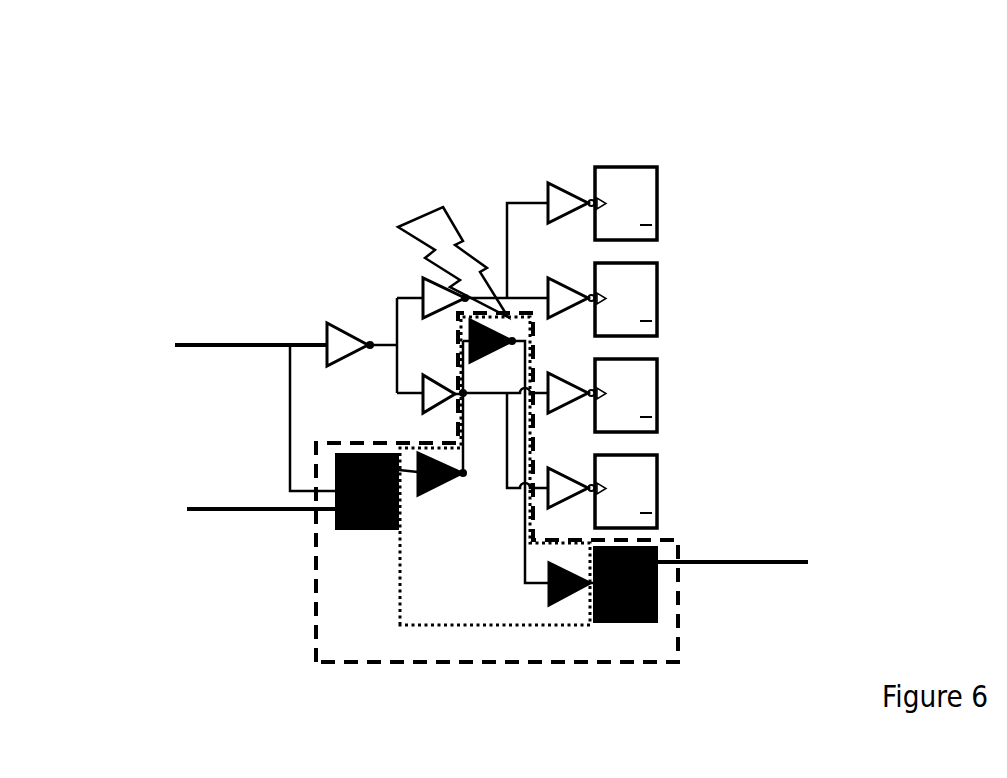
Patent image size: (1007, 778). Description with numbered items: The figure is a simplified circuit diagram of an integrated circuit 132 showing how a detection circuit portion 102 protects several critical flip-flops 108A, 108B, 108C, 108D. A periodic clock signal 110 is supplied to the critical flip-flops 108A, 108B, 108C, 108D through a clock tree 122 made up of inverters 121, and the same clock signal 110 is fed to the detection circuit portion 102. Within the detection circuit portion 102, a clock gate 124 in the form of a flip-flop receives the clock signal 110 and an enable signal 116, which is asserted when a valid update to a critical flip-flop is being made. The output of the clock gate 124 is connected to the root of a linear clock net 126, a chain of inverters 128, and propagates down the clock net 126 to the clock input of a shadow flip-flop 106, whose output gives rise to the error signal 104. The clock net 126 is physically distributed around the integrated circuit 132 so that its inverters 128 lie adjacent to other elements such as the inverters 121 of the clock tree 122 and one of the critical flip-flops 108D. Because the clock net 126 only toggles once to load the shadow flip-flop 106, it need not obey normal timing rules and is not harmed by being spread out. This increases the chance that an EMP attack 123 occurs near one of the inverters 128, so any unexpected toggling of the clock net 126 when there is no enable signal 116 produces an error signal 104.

The integrated circuit 132 is at (283, 150).
The periodic clock signal 110 is at (270, 394).
The enable signal 116 is at (232, 515).
The clock tree 122 is at (391, 299).
The EMP attack 123 is at (424, 206).
The inverters 121 is at (571, 299).
The critical flip-flop 108A is at (658, 194).
The critical flip-flop 108B is at (658, 294).
The critical flip-flop 108C is at (658, 397).
The critical flip-flop 108D is at (658, 493).
The clock gate 124 is at (335, 528).
The inverters 128 is at (531, 533).
The clock net 126 is at (460, 630).
The detection circuit portion 102 is at (313, 624).
The shadow flip-flop 106 is at (652, 623).
The error signal 104 is at (765, 561).